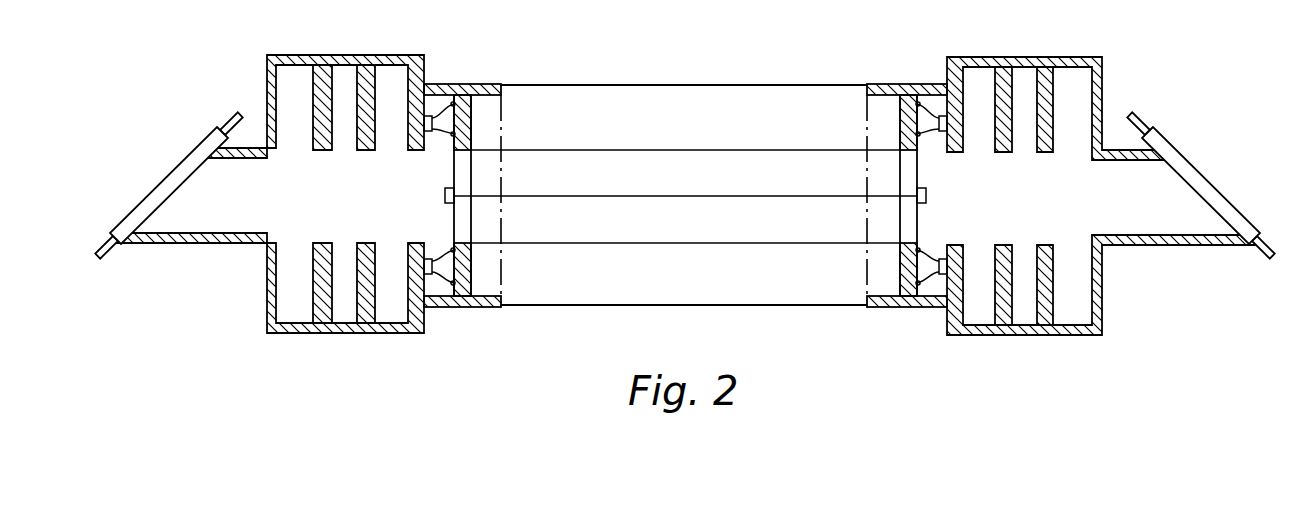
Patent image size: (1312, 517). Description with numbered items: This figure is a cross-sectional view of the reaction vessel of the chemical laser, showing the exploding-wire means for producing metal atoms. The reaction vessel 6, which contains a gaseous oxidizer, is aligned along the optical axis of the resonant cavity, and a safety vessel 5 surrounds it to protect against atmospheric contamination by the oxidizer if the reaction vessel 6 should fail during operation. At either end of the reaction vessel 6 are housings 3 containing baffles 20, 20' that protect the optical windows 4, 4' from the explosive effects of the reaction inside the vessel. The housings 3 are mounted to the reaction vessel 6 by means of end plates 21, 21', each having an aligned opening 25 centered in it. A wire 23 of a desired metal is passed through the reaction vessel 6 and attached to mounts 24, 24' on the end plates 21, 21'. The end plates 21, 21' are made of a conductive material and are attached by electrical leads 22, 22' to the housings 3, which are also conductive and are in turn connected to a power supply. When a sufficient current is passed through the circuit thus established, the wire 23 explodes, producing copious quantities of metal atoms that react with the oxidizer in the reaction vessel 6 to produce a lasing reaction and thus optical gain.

The housing 3 is at (277, 55).
The optical window 4 is at (168, 185).
The optical window 4' is at (1204, 185).
The safety vessel 5 is at (603, 85).
The reaction vessel 6 is at (653, 150).
The baffles 20 is at (302, 194).
The baffles 20' is at (1069, 196).
The end plate 21 is at (536, 150).
The end plate 21' is at (823, 166).
The electrical lead 22 is at (459, 145).
The electrical lead 22' is at (911, 149).
The wire 23 is at (588, 197).
The mount 24 is at (403, 206).
The mount 24' is at (961, 208).
The opening 25 is at (453, 168).